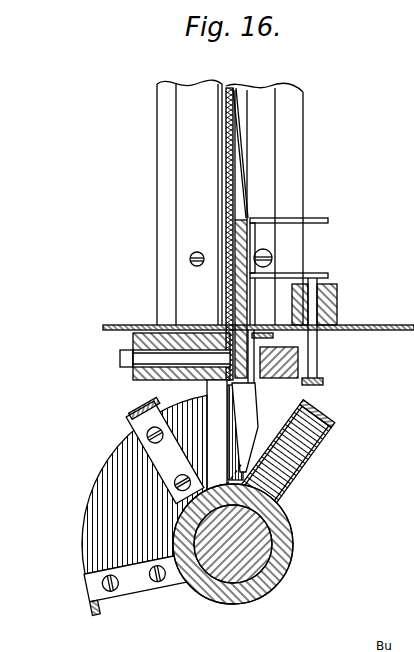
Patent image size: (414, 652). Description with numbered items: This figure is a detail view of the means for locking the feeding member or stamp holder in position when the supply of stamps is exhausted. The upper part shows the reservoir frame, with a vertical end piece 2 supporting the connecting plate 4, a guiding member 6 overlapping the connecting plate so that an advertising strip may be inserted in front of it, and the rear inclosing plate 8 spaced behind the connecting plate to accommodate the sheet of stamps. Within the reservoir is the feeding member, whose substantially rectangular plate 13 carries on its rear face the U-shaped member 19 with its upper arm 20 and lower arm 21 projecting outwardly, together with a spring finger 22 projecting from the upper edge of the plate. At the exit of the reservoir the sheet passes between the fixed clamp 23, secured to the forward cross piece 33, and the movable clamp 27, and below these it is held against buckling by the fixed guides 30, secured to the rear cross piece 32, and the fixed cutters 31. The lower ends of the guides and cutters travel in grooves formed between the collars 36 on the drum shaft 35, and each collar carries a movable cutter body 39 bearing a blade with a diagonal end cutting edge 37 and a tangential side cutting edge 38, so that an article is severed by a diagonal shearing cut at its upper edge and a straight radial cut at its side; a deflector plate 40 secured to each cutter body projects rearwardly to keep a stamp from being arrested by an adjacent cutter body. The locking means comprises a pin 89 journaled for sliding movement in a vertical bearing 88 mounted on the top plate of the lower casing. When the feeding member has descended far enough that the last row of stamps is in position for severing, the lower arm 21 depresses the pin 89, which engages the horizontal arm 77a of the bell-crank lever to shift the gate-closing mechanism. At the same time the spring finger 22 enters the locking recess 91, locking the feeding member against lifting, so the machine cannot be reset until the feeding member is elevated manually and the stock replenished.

The vertical end piece 2 is at (157, 198).
The connecting plate 4 is at (231, 88).
The guiding member 6 is at (185, 218).
The rear inclosing plate 8 is at (248, 130).
The plate 13 is at (248, 303).
The U-shaped member 19 is at (254, 250).
The upper arm 20 is at (318, 218).
The lower arm 21 is at (325, 273).
The spring finger 22 is at (243, 147).
The fixed clamp 23 is at (213, 412).
The movable clamp 27 is at (273, 336).
The fixed guide 30 is at (268, 412).
The fixed cutter 31 is at (176, 402).
The rear cross piece 32 is at (298, 362).
The forward cross piece 33 is at (133, 345).
The drum shaft 35 is at (255, 548).
The collar 36 is at (287, 522).
The diagonal end cutting edge 37 is at (130, 430).
The side cutting edge 38 is at (157, 453).
The movable cutter body 39 is at (310, 456).
The deflector plate 40 is at (297, 405).
The horizontal arm 77a is at (323, 382).
The vertical bearing 88 is at (338, 320).
The pin 89 is at (338, 302).
The locking recess 91 is at (233, 123).